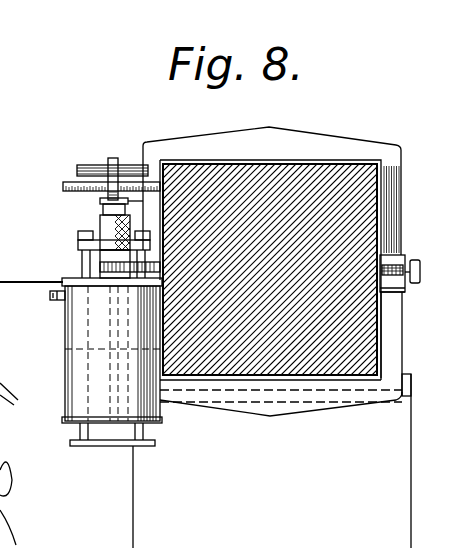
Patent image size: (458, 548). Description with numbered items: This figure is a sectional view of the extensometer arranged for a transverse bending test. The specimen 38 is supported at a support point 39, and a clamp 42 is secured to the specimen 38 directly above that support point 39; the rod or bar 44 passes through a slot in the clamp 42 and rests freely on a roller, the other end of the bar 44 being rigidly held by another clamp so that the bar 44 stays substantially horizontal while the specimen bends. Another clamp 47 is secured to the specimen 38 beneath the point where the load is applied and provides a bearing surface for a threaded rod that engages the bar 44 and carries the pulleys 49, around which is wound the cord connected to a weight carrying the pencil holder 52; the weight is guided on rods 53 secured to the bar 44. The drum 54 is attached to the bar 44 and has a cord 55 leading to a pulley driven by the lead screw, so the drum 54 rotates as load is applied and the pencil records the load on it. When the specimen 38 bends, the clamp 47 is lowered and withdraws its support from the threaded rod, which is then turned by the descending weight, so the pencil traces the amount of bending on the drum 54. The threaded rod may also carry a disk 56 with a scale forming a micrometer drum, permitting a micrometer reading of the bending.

The specimen 38 is at (342, 187).
The support point 39 is at (228, 377).
The clamp 42 is at (231, 137).
The rod or bar 44 is at (110, 223).
The clamp 47 is at (392, 327).
The pulleys 49 is at (92, 166).
The pencil holder 52 is at (58, 297).
The rods 53 is at (135, 437).
The drum 54 is at (72, 338).
The cord 55 is at (31, 272).
The disk 56 is at (68, 186).